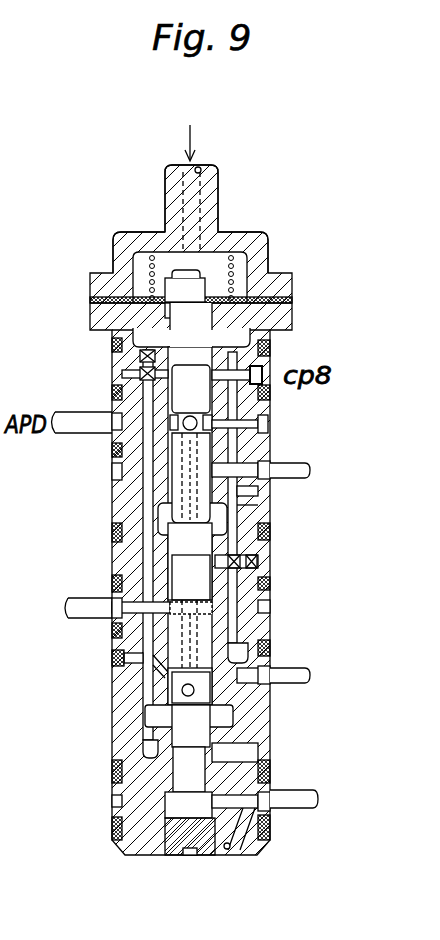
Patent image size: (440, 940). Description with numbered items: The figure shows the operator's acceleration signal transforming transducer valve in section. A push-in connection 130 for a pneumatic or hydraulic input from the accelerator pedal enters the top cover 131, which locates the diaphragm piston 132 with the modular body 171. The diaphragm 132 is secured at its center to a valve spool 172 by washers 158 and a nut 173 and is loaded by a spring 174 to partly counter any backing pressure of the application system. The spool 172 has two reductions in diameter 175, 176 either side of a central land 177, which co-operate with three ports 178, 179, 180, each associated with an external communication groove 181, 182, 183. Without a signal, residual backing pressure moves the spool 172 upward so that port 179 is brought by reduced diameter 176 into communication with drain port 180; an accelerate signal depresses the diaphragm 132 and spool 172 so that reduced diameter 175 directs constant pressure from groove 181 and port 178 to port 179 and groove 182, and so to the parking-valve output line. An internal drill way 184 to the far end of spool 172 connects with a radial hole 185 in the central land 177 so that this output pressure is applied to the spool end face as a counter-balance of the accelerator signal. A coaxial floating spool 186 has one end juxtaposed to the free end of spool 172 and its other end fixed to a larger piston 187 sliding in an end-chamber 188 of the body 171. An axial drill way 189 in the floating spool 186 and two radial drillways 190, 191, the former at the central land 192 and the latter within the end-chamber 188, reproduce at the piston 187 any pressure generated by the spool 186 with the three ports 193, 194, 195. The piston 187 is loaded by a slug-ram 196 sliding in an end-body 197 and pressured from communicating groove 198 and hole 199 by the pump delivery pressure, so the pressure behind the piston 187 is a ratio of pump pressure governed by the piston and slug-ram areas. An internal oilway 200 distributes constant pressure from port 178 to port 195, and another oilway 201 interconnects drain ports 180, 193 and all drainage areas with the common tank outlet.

The push-in connection 130 is at (199, 165).
The top cover 131 is at (216, 230).
The diaphragm piston 132 is at (248, 286).
The washers 158 is at (283, 300).
The modular body 171 is at (284, 314).
The valve spool 172 is at (203, 339).
The nut 173 is at (181, 284).
The spring 174 is at (233, 263).
The reduced diameter 175 is at (200, 398).
The reduced diameter 176 is at (262, 460).
The central land 177 is at (180, 416).
The port 178 is at (262, 380).
The port 179 is at (262, 445).
The port 180 is at (245, 493).
The external communication groove 181 is at (270, 367).
The external communication groove 182 is at (262, 426).
The external communication groove 183 is at (272, 470).
The internal drill way 184 is at (186, 460).
The radial hole 185 is at (172, 428).
The floating spool 186 is at (200, 582).
The piston 187 is at (232, 732).
The end-chamber 188 is at (232, 715).
The axial drill way 189 is at (188, 640).
The radial drillway 190 is at (198, 608).
The radial drillway 191 is at (202, 688).
The central land 192 is at (172, 612).
The port 193 is at (250, 558).
The port 194 is at (157, 605).
The port 195 is at (162, 655).
The slug-ram 196 is at (192, 770).
The end-body 197 is at (226, 852).
The communicating groove 198 is at (272, 808).
The hole 199 is at (250, 835).
The internal oilway 200 is at (150, 505).
The oilway 201 is at (255, 510).